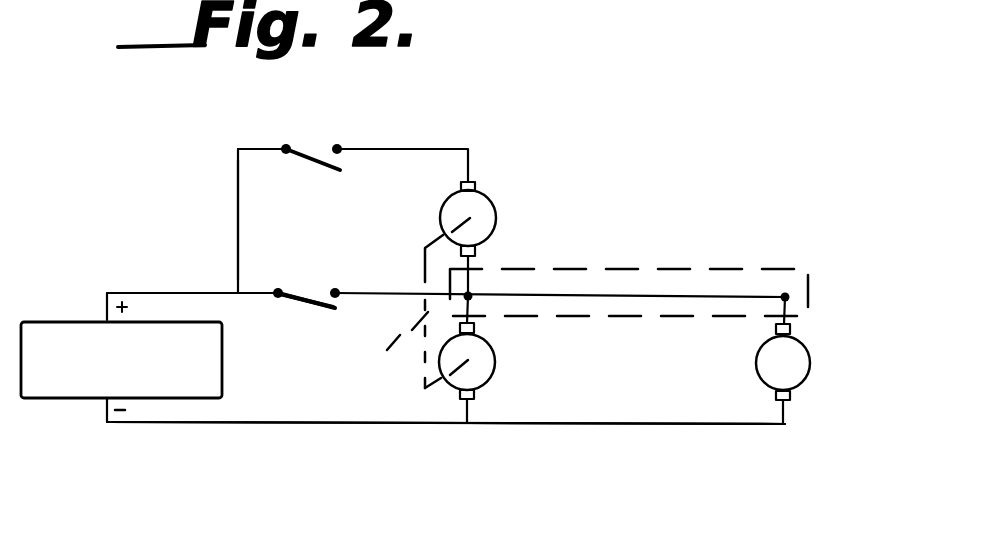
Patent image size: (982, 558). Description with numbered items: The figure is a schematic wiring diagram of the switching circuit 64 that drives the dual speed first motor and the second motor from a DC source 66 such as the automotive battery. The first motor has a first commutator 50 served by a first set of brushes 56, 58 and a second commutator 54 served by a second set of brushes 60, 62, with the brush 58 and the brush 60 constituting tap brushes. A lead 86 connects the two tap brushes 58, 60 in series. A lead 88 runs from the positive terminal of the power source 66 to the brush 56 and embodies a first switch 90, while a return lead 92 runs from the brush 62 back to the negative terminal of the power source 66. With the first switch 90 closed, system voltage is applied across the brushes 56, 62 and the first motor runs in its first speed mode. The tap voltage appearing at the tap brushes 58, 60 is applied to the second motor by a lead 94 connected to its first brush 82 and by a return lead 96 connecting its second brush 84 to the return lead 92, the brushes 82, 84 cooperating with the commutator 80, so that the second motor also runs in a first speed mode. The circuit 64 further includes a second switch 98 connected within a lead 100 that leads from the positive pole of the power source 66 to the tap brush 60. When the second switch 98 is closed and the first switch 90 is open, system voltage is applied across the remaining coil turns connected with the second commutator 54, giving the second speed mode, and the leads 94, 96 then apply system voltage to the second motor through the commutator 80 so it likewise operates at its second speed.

The first commutator 50 is at (493, 217).
The second commutator 54 is at (490, 364).
The brush 56 is at (478, 183).
The tap brush 58 is at (476, 252).
The tap brush 60 is at (477, 326).
The brush 62 is at (477, 393).
The switching circuit 64 is at (226, 281).
The DC source 66 is at (65, 328).
The commutator 80 is at (803, 358).
The brush 82 is at (792, 330).
The brush 84 is at (792, 400).
The lead 86 is at (465, 272).
The lead 88 is at (238, 208).
The first switch 90 is at (312, 153).
The return lead 92 is at (412, 425).
The lead 94 is at (627, 295).
The return lead 96 is at (688, 428).
The second switch 98 is at (307, 304).
The lead 100 is at (400, 290).